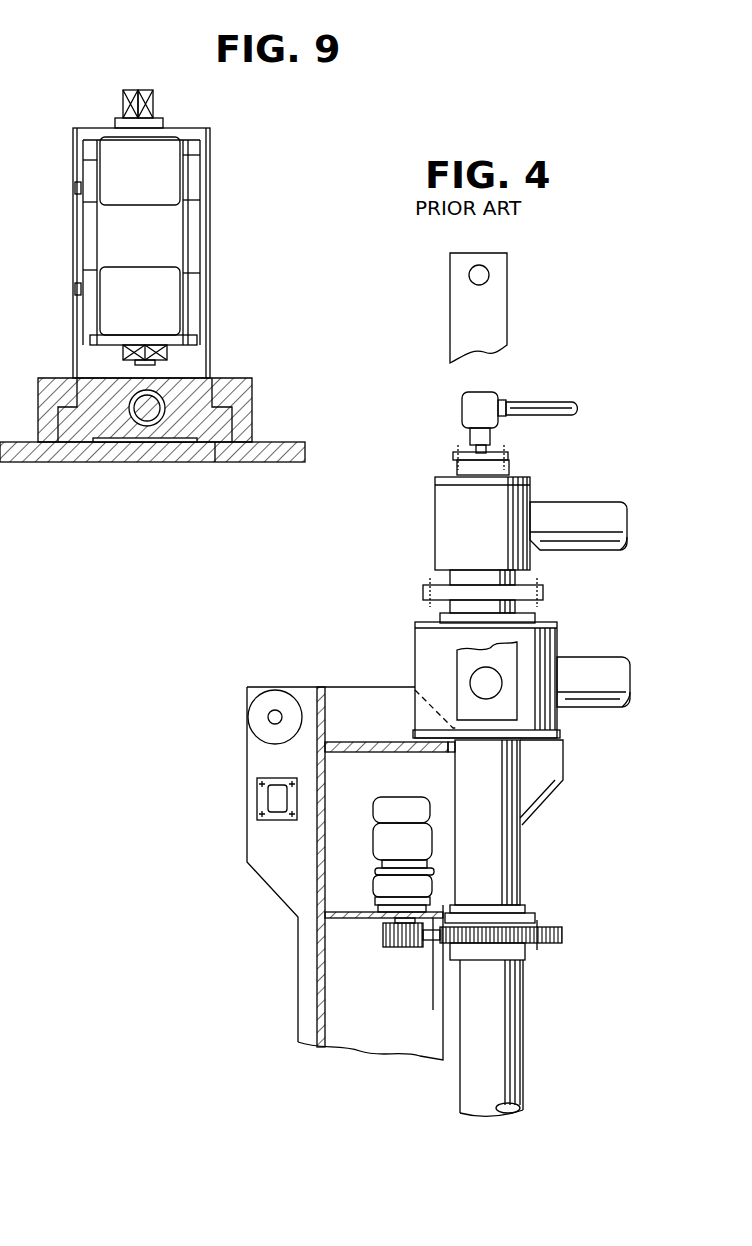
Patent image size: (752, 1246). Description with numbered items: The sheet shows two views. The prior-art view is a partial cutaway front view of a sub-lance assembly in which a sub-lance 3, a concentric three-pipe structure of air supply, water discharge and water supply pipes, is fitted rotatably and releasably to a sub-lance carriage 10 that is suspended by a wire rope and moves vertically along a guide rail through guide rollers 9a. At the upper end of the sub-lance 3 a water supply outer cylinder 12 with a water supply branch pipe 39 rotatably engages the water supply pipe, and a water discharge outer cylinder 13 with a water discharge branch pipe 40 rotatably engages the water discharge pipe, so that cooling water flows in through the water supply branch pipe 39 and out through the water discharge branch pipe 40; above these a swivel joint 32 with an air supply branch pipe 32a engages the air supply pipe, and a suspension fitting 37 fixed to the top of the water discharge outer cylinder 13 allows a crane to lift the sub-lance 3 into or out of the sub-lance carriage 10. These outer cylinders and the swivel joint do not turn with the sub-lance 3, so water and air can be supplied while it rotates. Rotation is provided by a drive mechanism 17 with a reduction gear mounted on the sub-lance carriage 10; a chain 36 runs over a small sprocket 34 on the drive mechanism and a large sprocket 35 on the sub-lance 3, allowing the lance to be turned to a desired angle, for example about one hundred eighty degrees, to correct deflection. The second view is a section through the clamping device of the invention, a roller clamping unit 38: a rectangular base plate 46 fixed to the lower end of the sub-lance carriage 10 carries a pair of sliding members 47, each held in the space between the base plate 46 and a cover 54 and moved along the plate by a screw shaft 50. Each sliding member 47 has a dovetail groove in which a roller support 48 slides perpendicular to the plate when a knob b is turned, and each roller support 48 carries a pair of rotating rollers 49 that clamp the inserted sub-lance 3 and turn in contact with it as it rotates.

In FIG. 9, the roller unit housing 38 is at (60, 212).
In FIG. 9, the knob b is at (154, 102).
In FIG. 9, the rotating rollers 49 is at (170, 142).
In FIG. 9, the roller support 48 is at (198, 222).
In FIG. 9, the cover 54 is at (55, 378).
In FIG. 9, the screw shaft 50 is at (156, 400).
In FIG. 9, the base plate 46 is at (305, 448).
In FIG. 9, the sliding members 47 is at (215, 440).
In FIG. 4, the suspension fitting 37 is at (508, 290).
In FIG. 4, the swivel joint 32 is at (490, 392).
In FIG. 4, the air supply branch pipe 32a is at (565, 402).
In FIG. 4, the water discharge outer cylinder 13 is at (530, 492).
In FIG. 4, the water discharge branch pipe 40 is at (585, 505).
In FIG. 4, the water supply outer cylinder 12 is at (557, 720).
In FIG. 4, the water supply branch pipe 39 is at (590, 660).
In FIG. 4, the sub-lance carriage 10 is at (298, 1012).
In FIG. 4, the guide rollers 9a is at (272, 785).
In FIG. 4, the drive mechanism 17 is at (375, 805).
In FIG. 4, the small sprocket 34 is at (405, 948).
In FIG. 4, the large sprocket 35 is at (562, 935).
In FIG. 4, the chain 36 is at (435, 950).
In FIG. 4, the sub-lance 3 is at (525, 1010).